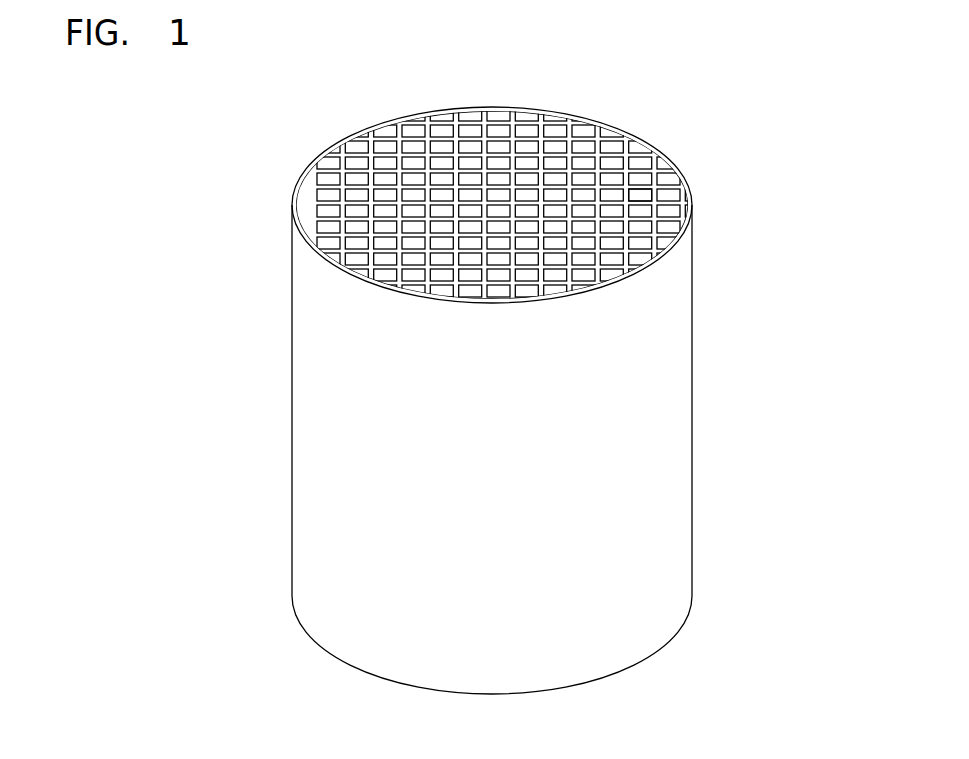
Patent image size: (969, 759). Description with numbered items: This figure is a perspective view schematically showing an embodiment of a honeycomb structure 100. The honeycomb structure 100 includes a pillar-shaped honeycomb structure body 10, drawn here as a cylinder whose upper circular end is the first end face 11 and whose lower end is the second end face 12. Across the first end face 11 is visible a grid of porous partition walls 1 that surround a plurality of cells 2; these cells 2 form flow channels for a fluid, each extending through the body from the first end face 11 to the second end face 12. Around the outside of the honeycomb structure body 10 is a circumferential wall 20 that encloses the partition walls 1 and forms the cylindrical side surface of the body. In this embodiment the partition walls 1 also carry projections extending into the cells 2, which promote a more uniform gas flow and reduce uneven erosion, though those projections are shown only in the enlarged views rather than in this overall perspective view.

The honeycomb structure 100 is at (833, 57).
The honeycomb structure body 10 is at (697, 247).
The first end face 11 is at (370, 127).
The second end face 12 is at (318, 654).
The partition wall 1 is at (597, 173).
The cell 2 is at (643, 195).
The circumferential wall 20 is at (660, 340).